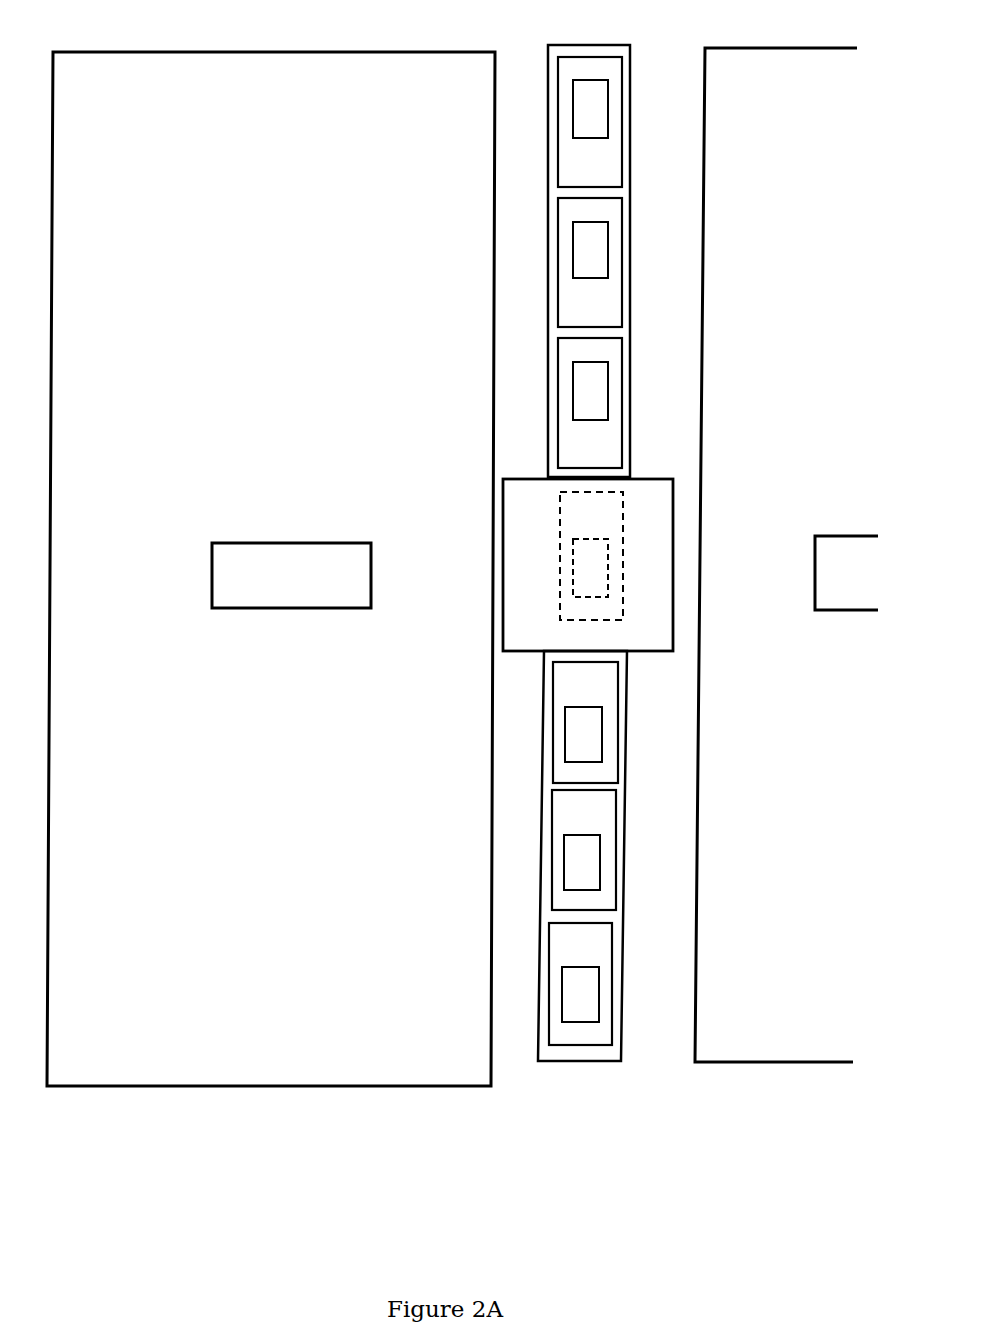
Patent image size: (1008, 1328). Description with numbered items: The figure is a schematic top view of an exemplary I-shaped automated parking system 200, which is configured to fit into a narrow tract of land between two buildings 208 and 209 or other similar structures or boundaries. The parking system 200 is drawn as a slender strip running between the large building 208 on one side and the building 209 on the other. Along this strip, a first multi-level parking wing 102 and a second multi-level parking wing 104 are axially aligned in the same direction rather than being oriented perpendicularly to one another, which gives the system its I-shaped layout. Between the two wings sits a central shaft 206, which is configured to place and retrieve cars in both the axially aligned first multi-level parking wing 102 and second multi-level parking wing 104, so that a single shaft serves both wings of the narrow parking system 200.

The automated parking system 200 is at (648, 106).
The first multi-level parking wing 102 is at (626, 822).
The second multi-level parking wing 104 is at (632, 330).
The central shaft 206 is at (648, 477).
The building 208 is at (258, 58).
The building 209 is at (708, 292).